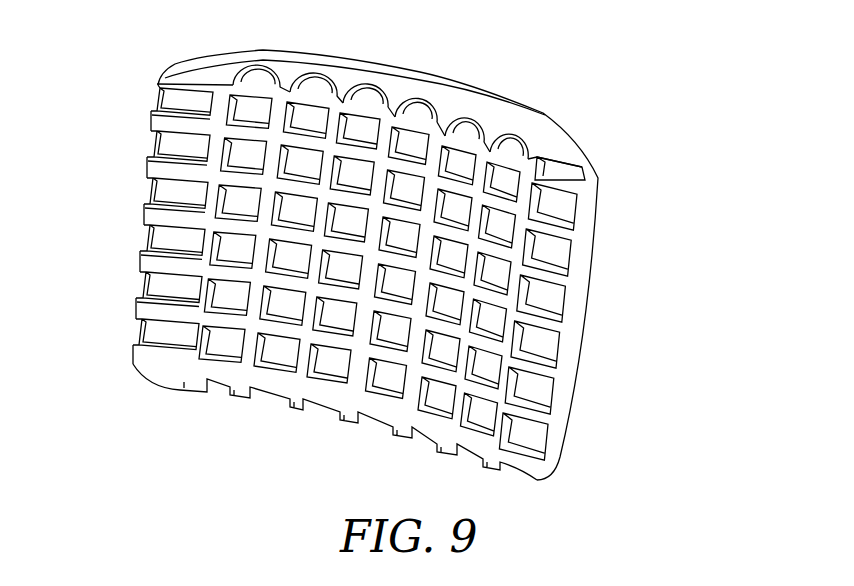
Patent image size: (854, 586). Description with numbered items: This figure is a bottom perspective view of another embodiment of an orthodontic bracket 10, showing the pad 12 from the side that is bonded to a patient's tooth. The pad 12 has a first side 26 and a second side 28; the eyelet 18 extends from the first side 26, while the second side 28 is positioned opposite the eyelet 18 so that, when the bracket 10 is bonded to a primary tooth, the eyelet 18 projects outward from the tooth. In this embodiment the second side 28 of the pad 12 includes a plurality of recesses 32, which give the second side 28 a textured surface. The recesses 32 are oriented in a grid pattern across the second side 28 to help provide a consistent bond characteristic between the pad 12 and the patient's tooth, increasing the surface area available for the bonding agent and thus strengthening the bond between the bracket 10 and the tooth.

The bracket 10 is at (366, 251).
The pad 12 is at (233, 62).
The eyelet 18 is at (507, 93).
The first side 26 is at (330, 72).
The second side 28 is at (137, 388).
The recesses 32 is at (225, 337).